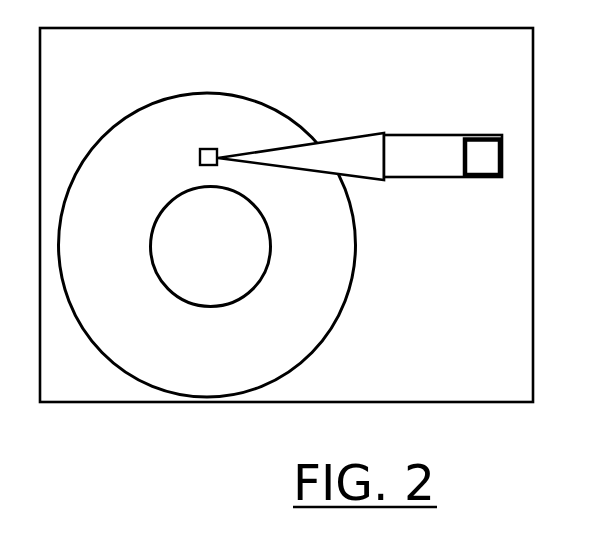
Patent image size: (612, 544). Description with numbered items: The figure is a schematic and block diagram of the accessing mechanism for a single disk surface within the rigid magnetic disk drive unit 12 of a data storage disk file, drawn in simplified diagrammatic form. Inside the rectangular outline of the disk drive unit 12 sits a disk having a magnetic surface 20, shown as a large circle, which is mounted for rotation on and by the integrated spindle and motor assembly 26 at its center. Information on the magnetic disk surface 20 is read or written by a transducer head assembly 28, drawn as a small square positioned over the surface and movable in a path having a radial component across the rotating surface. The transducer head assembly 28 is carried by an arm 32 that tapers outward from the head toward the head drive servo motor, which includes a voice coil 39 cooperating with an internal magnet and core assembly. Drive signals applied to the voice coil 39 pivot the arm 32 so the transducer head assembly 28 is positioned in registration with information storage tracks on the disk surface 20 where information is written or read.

The rigid magnetic disk drive unit 12 is at (466, 333).
The magnetic surface 20 is at (198, 352).
The integrated spindle and motor assembly 26 is at (211, 247).
The transducer head assembly 28 is at (205, 144).
The arm 32 is at (360, 156).
The voice coil 39 is at (482, 158).